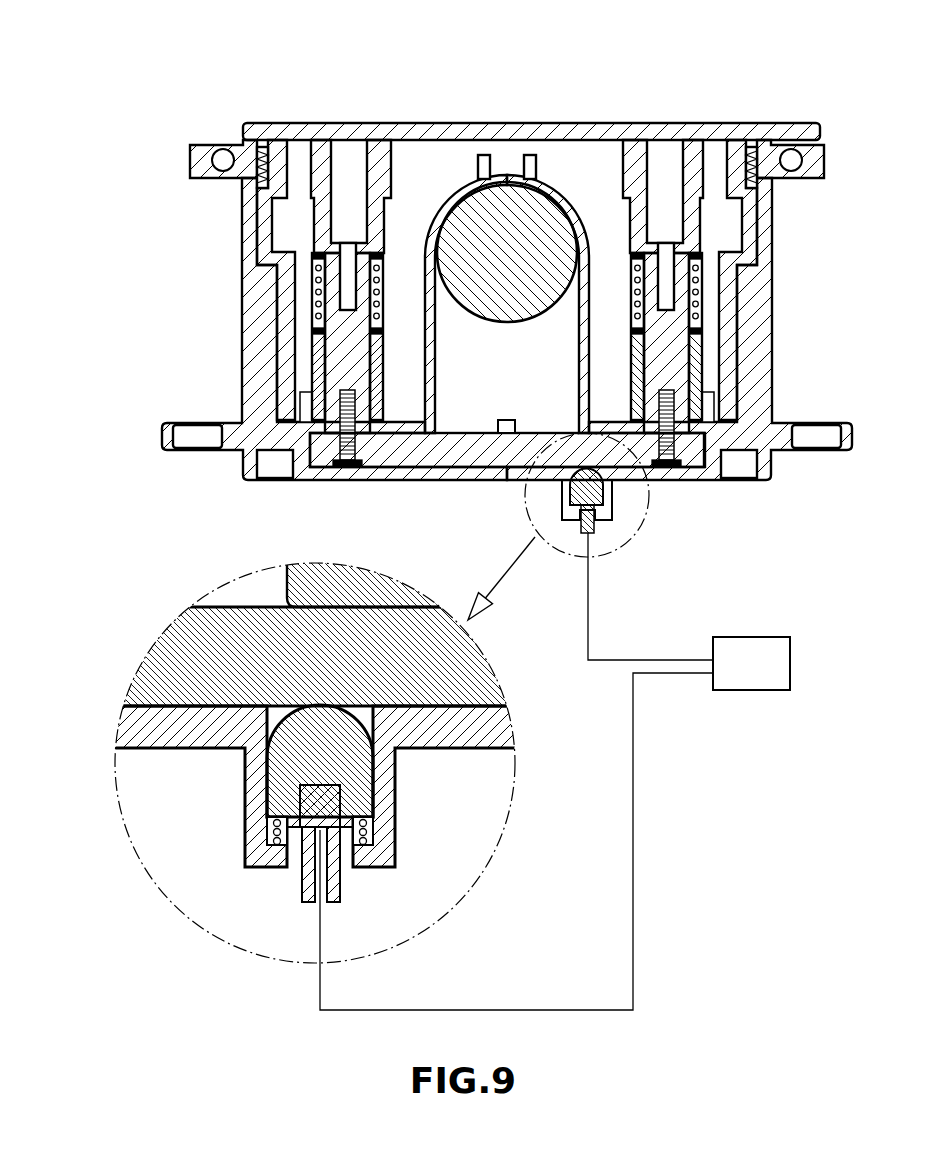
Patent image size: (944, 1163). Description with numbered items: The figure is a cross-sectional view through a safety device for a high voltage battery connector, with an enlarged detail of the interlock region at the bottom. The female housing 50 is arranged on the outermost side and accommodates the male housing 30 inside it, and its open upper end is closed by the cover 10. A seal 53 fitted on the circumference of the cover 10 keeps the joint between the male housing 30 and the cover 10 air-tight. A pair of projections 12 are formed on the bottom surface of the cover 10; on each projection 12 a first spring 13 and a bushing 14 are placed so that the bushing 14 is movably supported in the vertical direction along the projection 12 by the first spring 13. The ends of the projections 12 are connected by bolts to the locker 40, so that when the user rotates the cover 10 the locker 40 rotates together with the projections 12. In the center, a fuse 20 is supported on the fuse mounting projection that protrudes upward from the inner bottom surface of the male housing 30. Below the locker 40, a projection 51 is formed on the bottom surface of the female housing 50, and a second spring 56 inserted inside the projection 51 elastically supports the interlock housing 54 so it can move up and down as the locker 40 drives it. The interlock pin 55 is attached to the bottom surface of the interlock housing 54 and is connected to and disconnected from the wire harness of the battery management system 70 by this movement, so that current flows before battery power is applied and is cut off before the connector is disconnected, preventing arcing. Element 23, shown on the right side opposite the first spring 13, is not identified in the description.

The cover 10 is at (447, 127).
The projection 12 is at (298, 182).
The fuse 20 is at (537, 223).
The seal 53 is at (262, 152).
The male housing 30 is at (263, 223).
The first spring 13 is at (317, 283).
The female housing 50 is at (243, 335).
The bushing 14 is at (317, 372).
The spring guide 23 is at (690, 312).
The locker 40 is at (408, 458).
The battery management system (BMS) 70 is at (752, 637).
The interlock housing 54 is at (297, 750).
The second spring 56 is at (270, 832).
The projection 51 is at (395, 818).
The interlock pin 55 is at (340, 882).